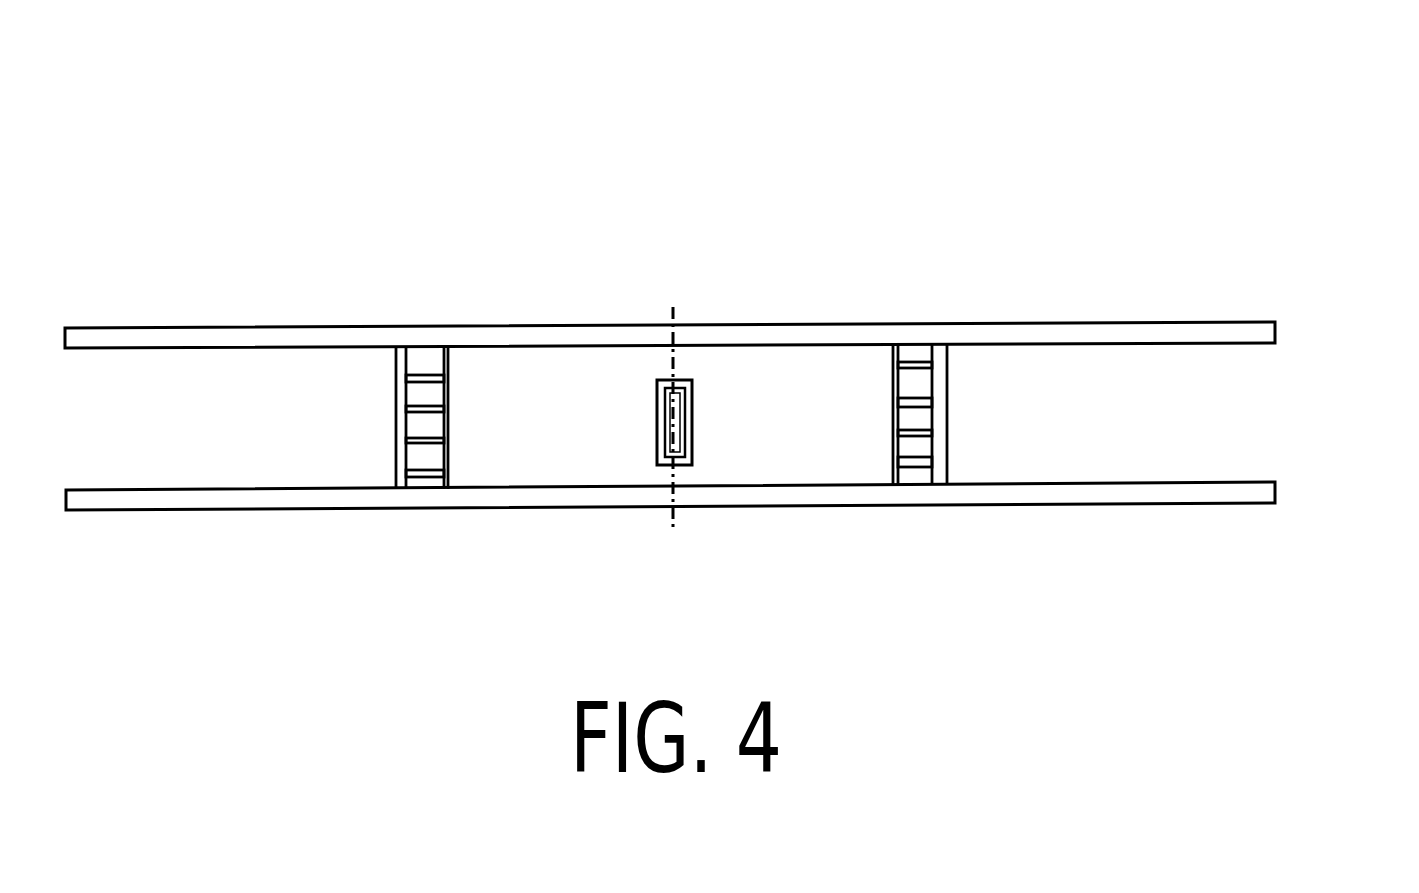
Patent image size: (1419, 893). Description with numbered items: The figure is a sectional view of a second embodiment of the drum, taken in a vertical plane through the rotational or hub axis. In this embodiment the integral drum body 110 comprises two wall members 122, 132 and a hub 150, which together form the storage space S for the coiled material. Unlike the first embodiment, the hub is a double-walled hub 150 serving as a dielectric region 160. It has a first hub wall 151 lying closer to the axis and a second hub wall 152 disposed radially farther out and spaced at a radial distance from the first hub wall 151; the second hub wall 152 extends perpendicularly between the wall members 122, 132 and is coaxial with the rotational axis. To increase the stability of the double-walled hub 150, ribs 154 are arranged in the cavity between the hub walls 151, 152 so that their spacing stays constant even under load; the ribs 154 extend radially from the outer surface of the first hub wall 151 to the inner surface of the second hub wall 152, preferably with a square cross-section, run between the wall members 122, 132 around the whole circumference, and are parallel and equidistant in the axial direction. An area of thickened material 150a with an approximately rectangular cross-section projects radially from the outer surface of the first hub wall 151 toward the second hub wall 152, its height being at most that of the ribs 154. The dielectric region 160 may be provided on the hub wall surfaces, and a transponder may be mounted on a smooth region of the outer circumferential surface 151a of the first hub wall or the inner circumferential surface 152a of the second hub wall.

The integral drum body 110 is at (770, 172).
The wall member 122 is at (1233, 322).
The wall member 132 is at (1212, 504).
The double-walled hub 150 is at (830, 356).
The area of thickened material 150a is at (660, 438).
The first hub wall 151 is at (815, 456).
The outer circumferential surface of the first hub wall 151a is at (903, 478).
The second hub wall 152 is at (412, 412).
The inner circumferential surface of the second hub wall 152a is at (930, 386).
The ribs 154 is at (436, 447).
The dielectric region 160 is at (437, 398).
The storage space S is at (1160, 414).